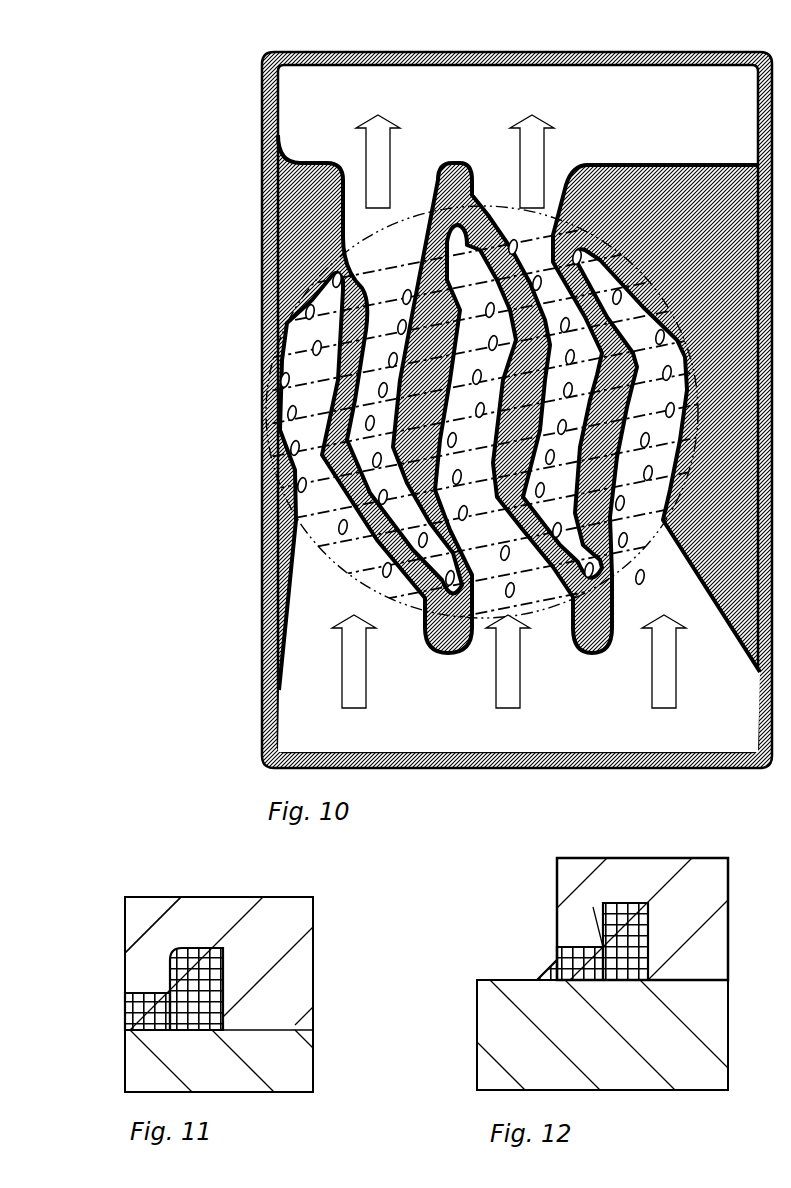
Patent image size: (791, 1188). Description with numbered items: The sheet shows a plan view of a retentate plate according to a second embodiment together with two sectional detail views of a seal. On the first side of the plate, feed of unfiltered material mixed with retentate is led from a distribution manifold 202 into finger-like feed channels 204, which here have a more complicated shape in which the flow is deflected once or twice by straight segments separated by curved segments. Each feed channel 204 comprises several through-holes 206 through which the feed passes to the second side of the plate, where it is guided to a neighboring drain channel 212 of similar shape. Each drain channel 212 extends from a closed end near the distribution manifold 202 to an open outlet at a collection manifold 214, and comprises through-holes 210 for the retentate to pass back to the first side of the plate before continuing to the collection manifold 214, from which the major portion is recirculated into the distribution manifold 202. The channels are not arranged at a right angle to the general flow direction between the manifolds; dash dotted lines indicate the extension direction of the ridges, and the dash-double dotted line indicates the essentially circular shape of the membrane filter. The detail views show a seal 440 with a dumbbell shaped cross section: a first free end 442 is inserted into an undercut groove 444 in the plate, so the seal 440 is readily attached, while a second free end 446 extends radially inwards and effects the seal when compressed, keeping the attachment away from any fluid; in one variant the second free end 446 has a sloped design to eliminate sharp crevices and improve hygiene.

In FIG. 10, the distribution manifold 202 is at (320, 726).
In FIG. 10, the feed channel 204 is at (322, 514).
In FIG. 10, the through-hole 206 is at (292, 442).
In FIG. 10, the through-hole 210 is at (300, 440).
In FIG. 10, the drain channel 212 is at (388, 297).
In FIG. 10, the collection manifold 214 is at (308, 100).
In FIG. 11, the seal 440 is at (150, 969).
In FIG. 12, the seal 440 is at (580, 925).
In FIG. 11, the first free end 442 is at (217, 948).
In FIG. 12, the first free end 442 is at (650, 903).
In FIG. 11, the undercut groove 444 is at (168, 952).
In FIG. 12, the undercut groove 444 is at (597, 903).
In FIG. 11, the second free end 446 is at (140, 1008).
In FIG. 12, the second free end 446 is at (553, 975).